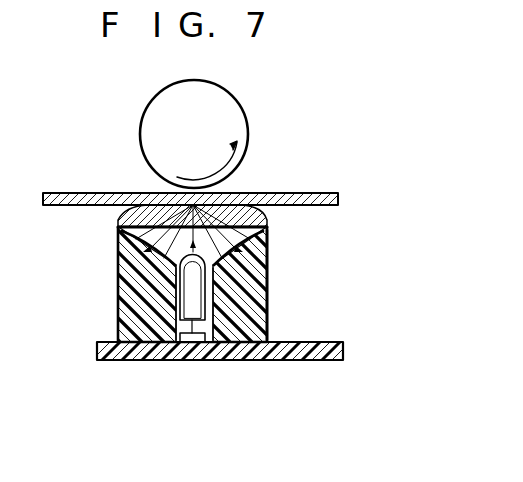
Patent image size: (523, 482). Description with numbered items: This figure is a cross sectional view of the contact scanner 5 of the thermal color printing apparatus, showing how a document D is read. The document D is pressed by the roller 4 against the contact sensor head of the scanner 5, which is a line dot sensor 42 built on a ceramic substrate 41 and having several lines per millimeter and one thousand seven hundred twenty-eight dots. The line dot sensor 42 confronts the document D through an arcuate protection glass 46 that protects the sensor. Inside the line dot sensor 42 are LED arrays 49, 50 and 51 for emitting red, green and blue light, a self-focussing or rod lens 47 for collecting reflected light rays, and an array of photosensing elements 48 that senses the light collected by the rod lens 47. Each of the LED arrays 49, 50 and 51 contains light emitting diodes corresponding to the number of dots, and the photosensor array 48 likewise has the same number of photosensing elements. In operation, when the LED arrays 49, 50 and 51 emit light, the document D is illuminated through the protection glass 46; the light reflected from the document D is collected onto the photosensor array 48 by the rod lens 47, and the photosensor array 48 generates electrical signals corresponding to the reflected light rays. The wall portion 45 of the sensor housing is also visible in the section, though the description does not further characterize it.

The roller 4 is at (224, 109).
The document D is at (336, 193).
The scanner 5 is at (327, 230).
The ceramic substrate 41 is at (333, 350).
The line dot sensor 42 is at (263, 322).
The housing side wall 45 is at (267, 247).
The arcuate protection glass 46 is at (228, 204).
The rod lens 47 is at (188, 302).
The photosensor array 48 is at (191, 345).
The LED array 49 is at (144, 248).
The LED array 50 is at (160, 262).
The LED array 51 is at (176, 276).